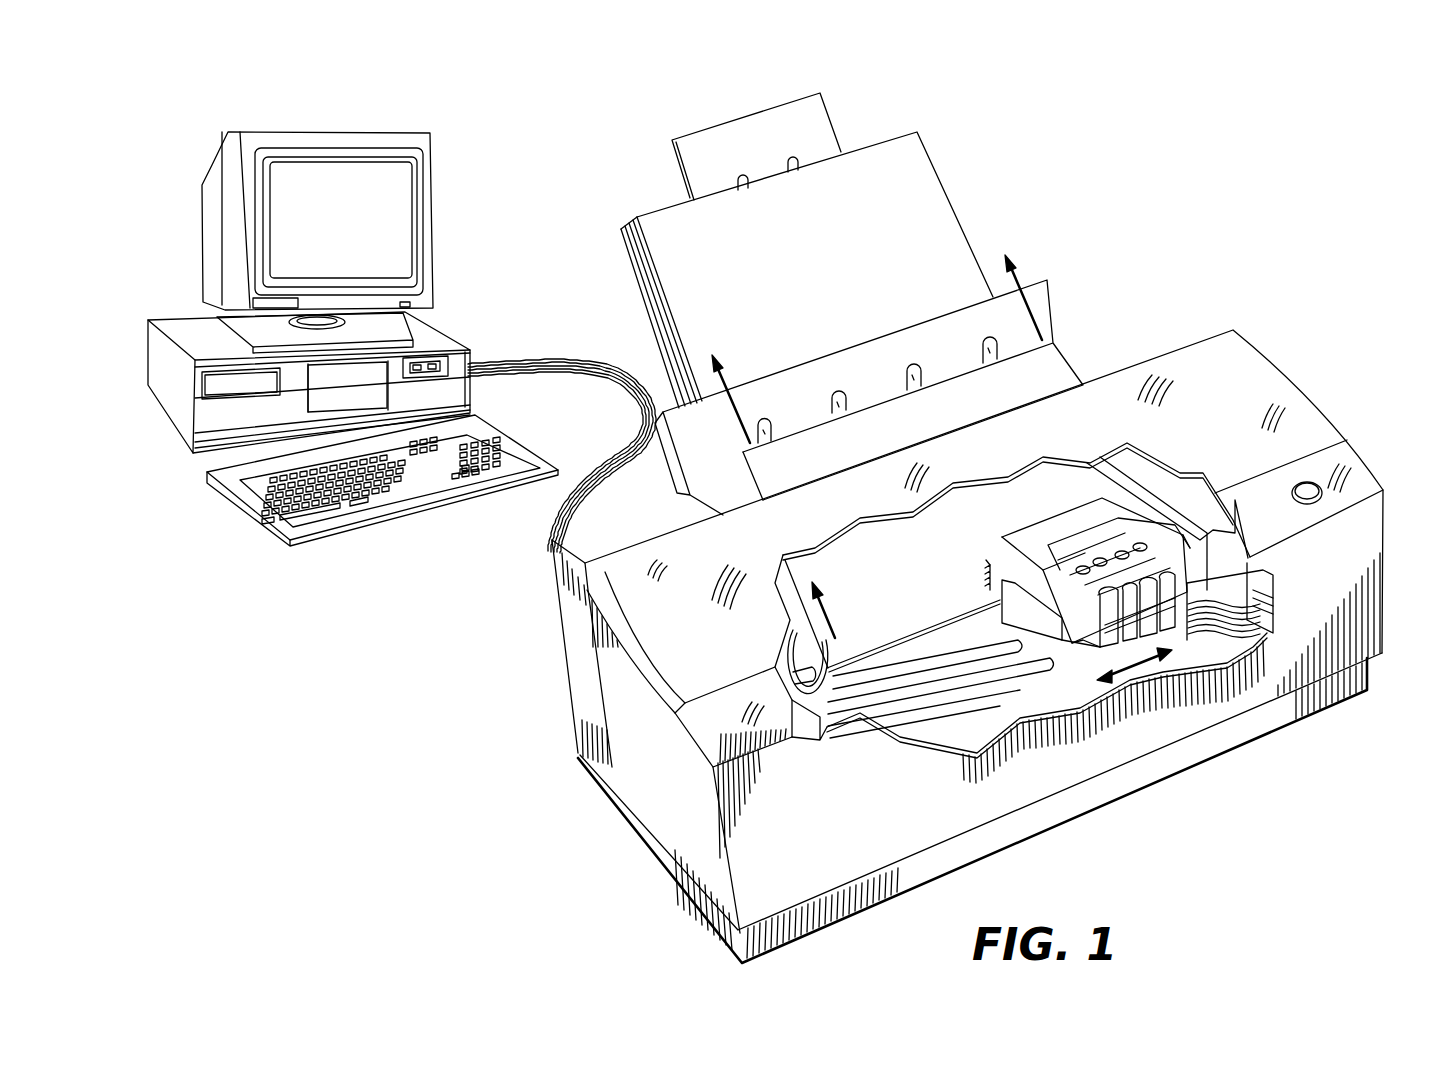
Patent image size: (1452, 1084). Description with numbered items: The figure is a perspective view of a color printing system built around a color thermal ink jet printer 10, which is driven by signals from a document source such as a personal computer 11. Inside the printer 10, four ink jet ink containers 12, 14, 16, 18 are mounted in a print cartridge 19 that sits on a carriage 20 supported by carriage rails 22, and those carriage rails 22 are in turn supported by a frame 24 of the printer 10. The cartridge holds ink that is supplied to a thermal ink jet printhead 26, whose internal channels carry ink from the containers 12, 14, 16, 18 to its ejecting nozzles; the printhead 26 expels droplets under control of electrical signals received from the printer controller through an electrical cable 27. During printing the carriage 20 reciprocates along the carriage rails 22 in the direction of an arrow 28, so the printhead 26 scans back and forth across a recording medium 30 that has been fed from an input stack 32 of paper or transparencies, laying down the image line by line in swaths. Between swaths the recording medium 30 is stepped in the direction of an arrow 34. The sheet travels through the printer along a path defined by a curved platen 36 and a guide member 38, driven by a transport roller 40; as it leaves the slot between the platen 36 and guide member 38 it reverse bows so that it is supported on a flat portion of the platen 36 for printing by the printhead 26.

The color thermal ink jet printer 10 is at (1325, 360).
The personal computer 11 is at (435, 198).
The ink jet ink container 12 is at (1113, 627).
The ink jet ink container 14 is at (1133, 622).
The ink jet ink container 16 is at (1180, 600).
The ink jet ink container 18 is at (1225, 627).
The print cartridge 19 is at (1038, 528).
The carriage 20 is at (1075, 670).
The carriage rails 22 is at (937, 683).
The frame 24 is at (837, 742).
The thermal ink jet printhead 26 is at (988, 567).
The electrical cable 27 is at (1266, 632).
The arrow 28 is at (1152, 673).
The recording medium 30 is at (1047, 367).
The input stack 32 is at (940, 227).
The arrow 34 is at (830, 615).
The curved platen 36 is at (806, 638).
The guide member 38 is at (898, 663).
The transport roller 40 is at (790, 672).